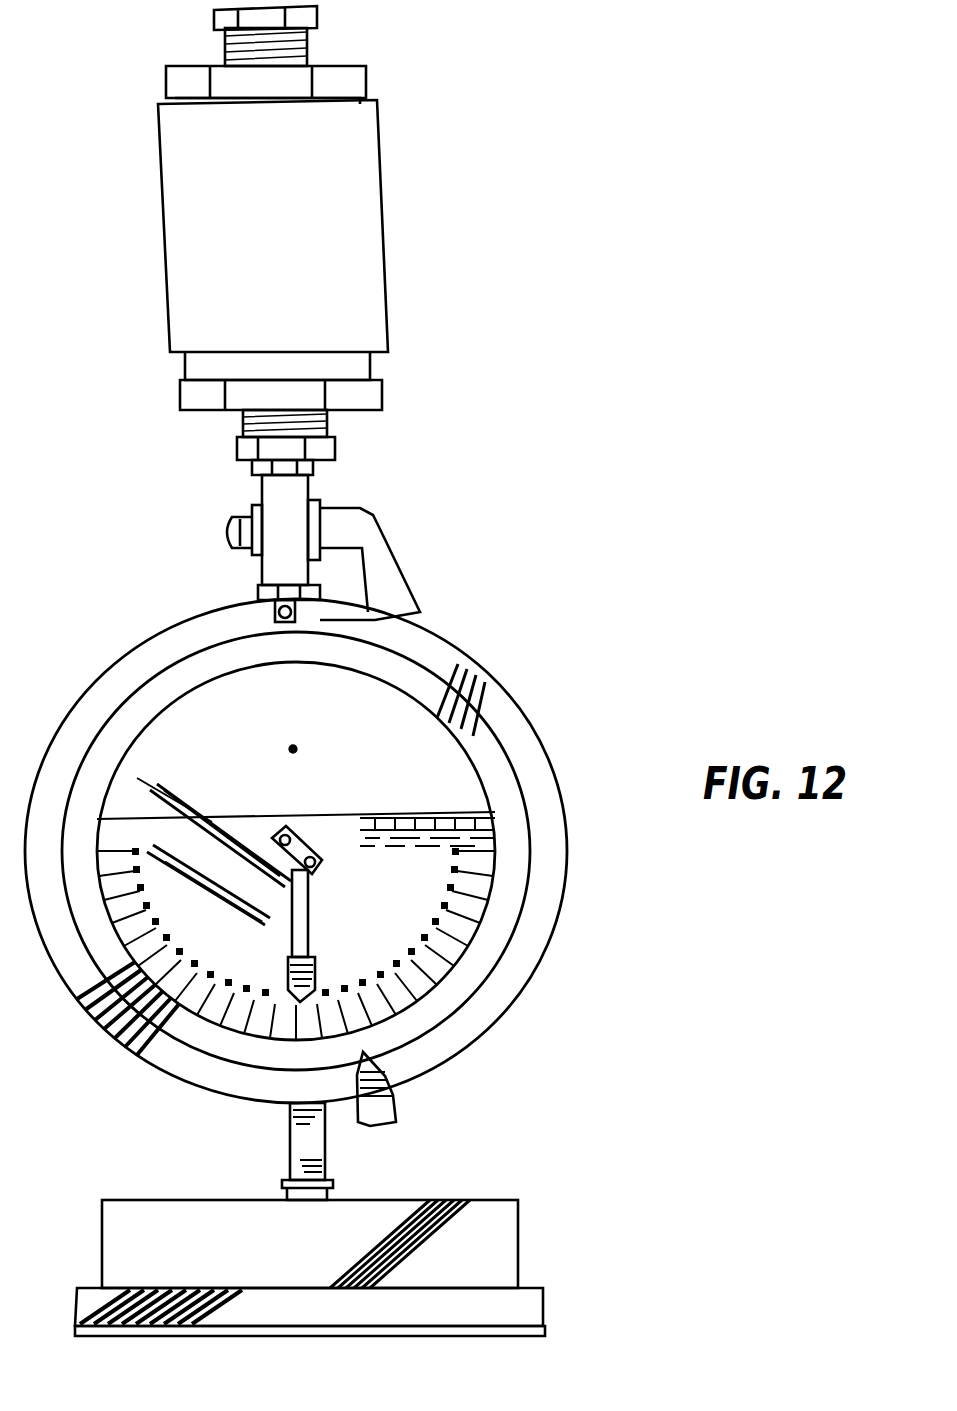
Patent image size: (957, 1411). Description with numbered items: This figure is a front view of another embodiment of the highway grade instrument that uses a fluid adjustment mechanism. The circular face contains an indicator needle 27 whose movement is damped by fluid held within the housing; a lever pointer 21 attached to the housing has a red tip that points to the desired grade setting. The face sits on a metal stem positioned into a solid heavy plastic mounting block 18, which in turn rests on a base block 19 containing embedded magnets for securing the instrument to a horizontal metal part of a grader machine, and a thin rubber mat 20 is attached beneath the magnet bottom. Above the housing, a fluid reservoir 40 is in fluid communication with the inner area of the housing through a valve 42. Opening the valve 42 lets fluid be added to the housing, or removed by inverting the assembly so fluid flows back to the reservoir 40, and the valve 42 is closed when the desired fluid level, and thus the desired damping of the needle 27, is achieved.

The mounting block 18 is at (507, 1238).
The base block 19 is at (530, 1308).
The rubber mat 20 is at (547, 1333).
The lever pointer 21 is at (398, 1122).
The indicator needle 27 is at (312, 946).
The fluid reservoir 40 is at (388, 228).
The valve 42 is at (328, 505).